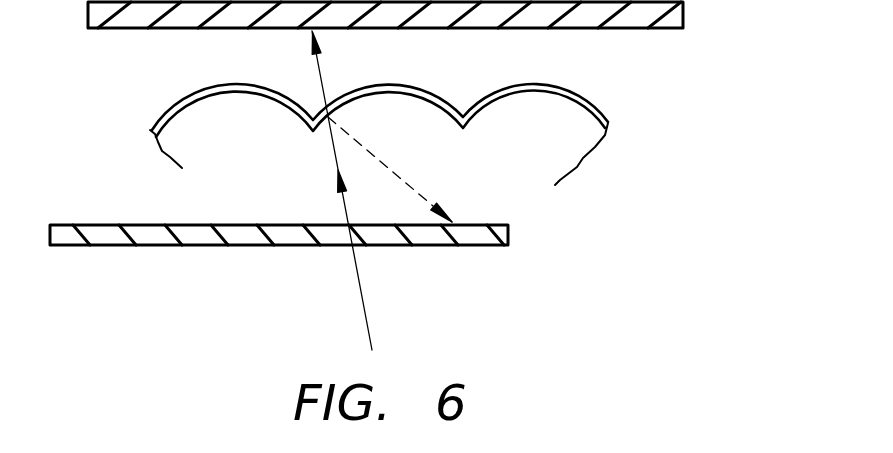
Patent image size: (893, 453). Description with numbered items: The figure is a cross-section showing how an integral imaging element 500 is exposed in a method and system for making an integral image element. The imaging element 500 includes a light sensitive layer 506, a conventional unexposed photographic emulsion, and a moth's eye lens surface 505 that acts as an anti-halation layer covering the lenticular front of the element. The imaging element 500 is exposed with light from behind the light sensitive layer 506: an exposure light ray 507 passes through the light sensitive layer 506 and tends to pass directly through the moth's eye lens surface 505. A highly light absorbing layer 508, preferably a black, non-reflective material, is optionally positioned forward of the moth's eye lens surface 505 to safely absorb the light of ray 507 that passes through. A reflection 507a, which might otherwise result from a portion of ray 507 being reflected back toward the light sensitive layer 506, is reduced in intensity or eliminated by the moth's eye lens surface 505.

The integral imaging element 500 is at (575, 140).
The moth's eye lens surface 505 is at (358, 87).
The light sensitive layer 506 is at (509, 233).
The exposure light ray 507 is at (360, 297).
The reflection 507a is at (377, 160).
The highly light absorbing layer 508 is at (660, 28).